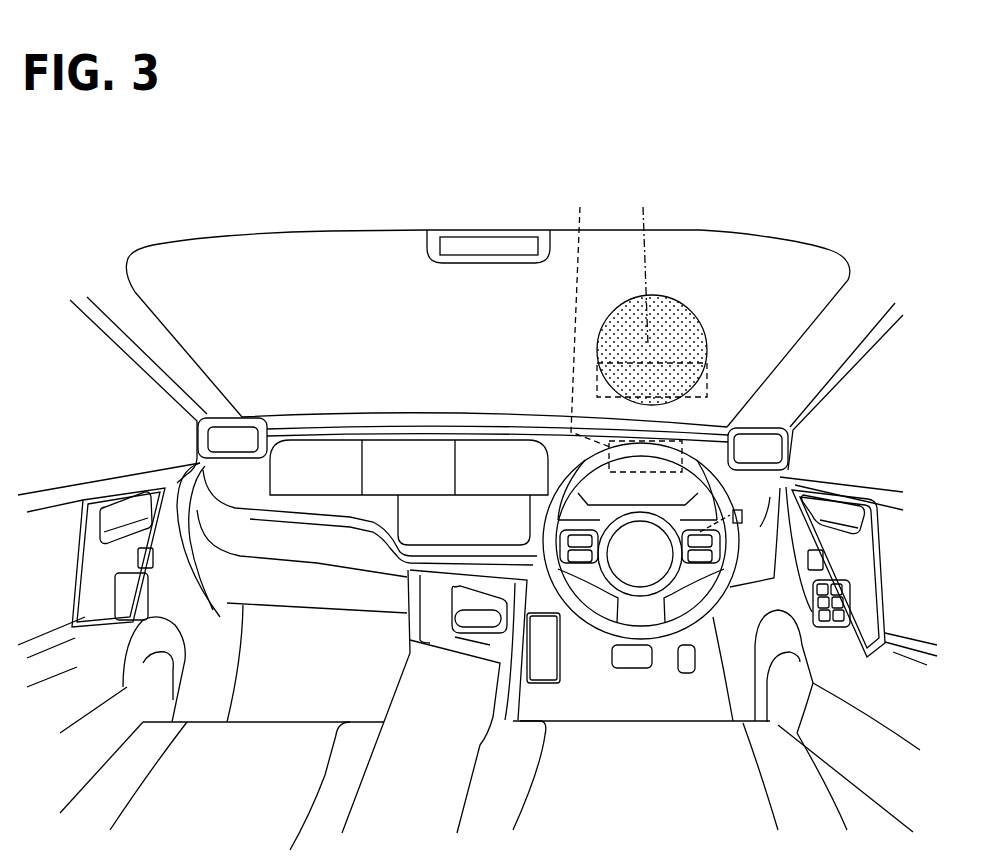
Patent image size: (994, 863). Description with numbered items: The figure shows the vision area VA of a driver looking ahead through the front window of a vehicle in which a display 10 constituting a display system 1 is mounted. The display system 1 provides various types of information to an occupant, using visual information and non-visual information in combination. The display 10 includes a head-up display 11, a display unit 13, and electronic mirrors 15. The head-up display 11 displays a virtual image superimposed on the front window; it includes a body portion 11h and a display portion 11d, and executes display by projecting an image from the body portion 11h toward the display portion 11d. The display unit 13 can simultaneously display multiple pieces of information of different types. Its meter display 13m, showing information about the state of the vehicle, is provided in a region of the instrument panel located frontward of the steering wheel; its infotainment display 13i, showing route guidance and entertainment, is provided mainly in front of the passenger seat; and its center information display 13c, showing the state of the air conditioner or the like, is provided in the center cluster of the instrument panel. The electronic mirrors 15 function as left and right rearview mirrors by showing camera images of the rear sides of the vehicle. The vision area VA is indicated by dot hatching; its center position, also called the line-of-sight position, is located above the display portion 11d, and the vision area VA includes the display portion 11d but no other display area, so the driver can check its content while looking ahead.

The display system 1 is at (152, 202).
The display 10 is at (826, 212).
The head-up display 11 is at (669, 172).
The body portion 11h is at (621, 322).
The display portion 11d is at (646, 259).
The vision area VA is at (698, 318).
The display unit 13 is at (368, 405).
The infotainment display 13i is at (407, 447).
The center information display 13c is at (477, 507).
The meter display 13m is at (655, 488).
The electronic mirrors 15 is at (250, 435).